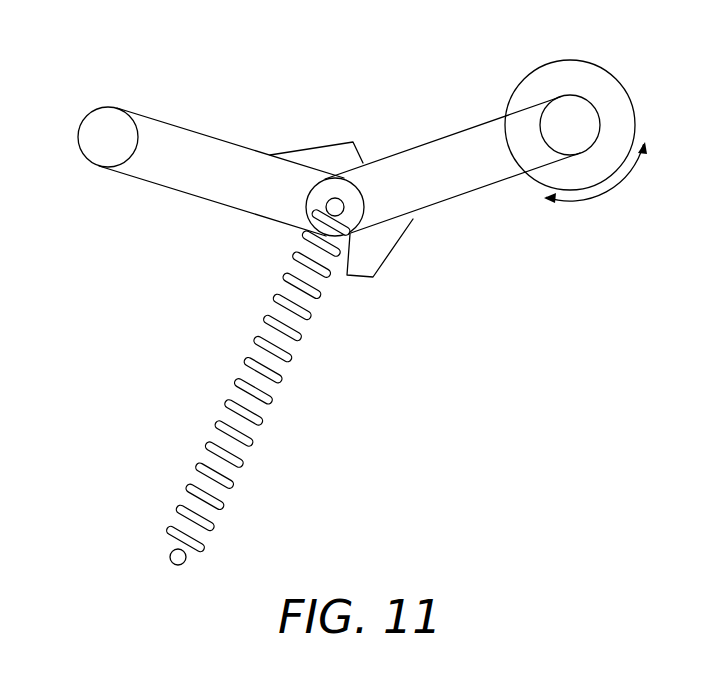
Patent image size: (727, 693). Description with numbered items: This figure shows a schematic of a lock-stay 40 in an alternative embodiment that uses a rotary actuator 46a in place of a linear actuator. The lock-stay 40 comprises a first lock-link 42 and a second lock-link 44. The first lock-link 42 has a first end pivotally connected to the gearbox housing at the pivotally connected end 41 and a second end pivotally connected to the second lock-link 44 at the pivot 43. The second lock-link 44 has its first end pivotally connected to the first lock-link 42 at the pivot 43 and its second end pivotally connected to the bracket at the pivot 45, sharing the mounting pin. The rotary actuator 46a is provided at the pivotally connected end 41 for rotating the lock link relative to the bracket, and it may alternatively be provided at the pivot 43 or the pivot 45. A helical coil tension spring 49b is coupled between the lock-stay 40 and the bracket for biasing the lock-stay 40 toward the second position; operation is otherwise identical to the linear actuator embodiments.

The lock-stay 40 is at (65, 91).
The pivotally connected end 41 is at (571, 100).
The first lock-link 42 is at (202, 143).
The pivot 43 is at (342, 186).
The second lock-link 44 is at (459, 190).
The pivot 45 is at (93, 150).
The rotary actuator 46a is at (626, 104).
The helical coil tension spring 49b is at (245, 384).